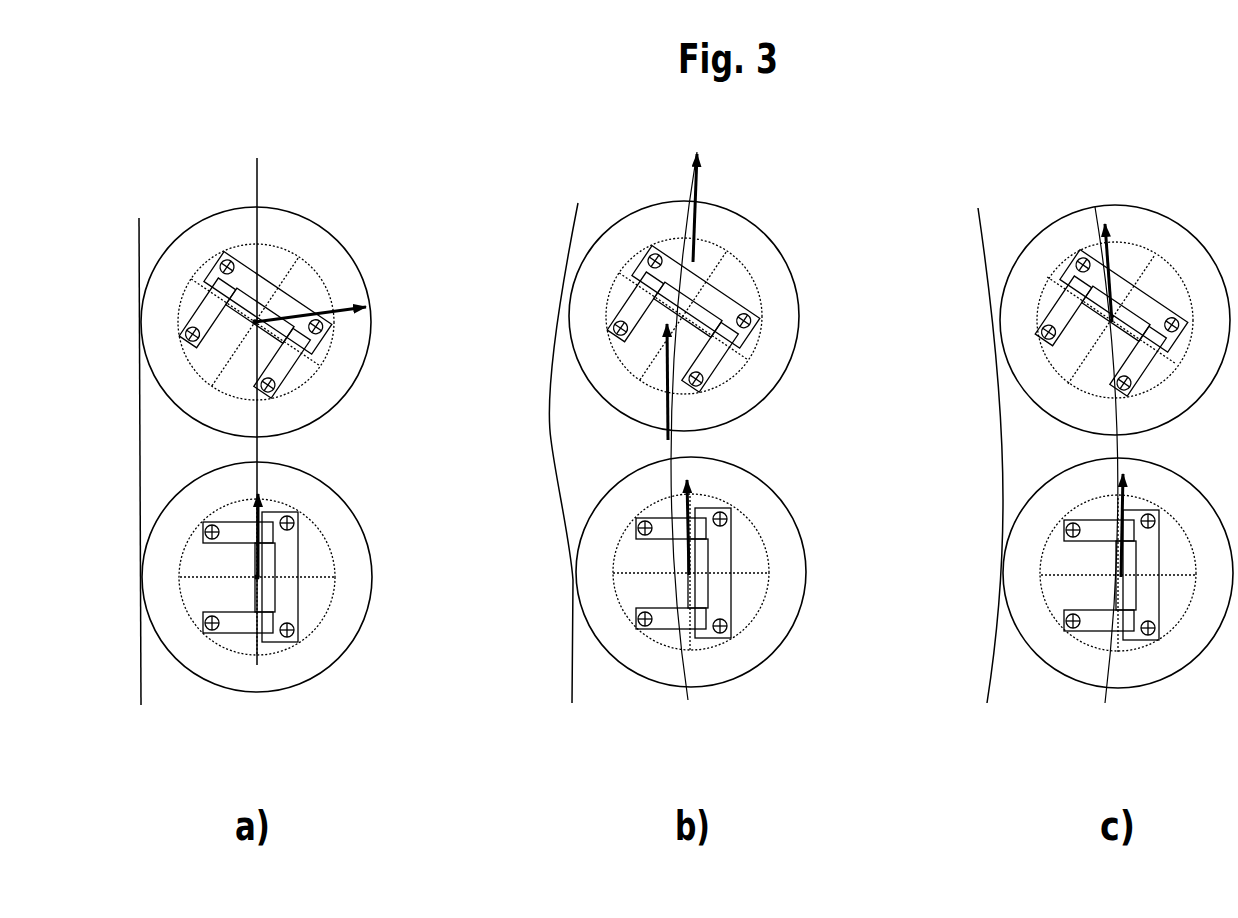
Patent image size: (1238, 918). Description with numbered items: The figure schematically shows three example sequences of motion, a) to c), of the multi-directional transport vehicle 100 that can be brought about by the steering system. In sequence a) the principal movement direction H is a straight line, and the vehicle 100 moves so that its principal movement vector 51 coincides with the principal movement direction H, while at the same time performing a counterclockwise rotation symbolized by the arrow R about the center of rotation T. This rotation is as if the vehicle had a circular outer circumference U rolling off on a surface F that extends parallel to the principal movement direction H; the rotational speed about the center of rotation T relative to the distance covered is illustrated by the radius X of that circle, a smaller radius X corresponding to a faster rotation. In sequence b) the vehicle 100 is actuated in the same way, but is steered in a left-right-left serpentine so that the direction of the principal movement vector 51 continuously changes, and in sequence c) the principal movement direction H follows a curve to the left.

The principal movement vector 51 is at (262, 540).
The multi-directional transport vehicle 100 is at (287, 598).
The surface F is at (137, 249).
The principal movement direction H is at (258, 200).
The arrow symbolizing counterclockwise rotation R is at (175, 225).
The circular outer circumference U is at (364, 262).
The radius X is at (335, 315).
The center of rotation T is at (251, 324).